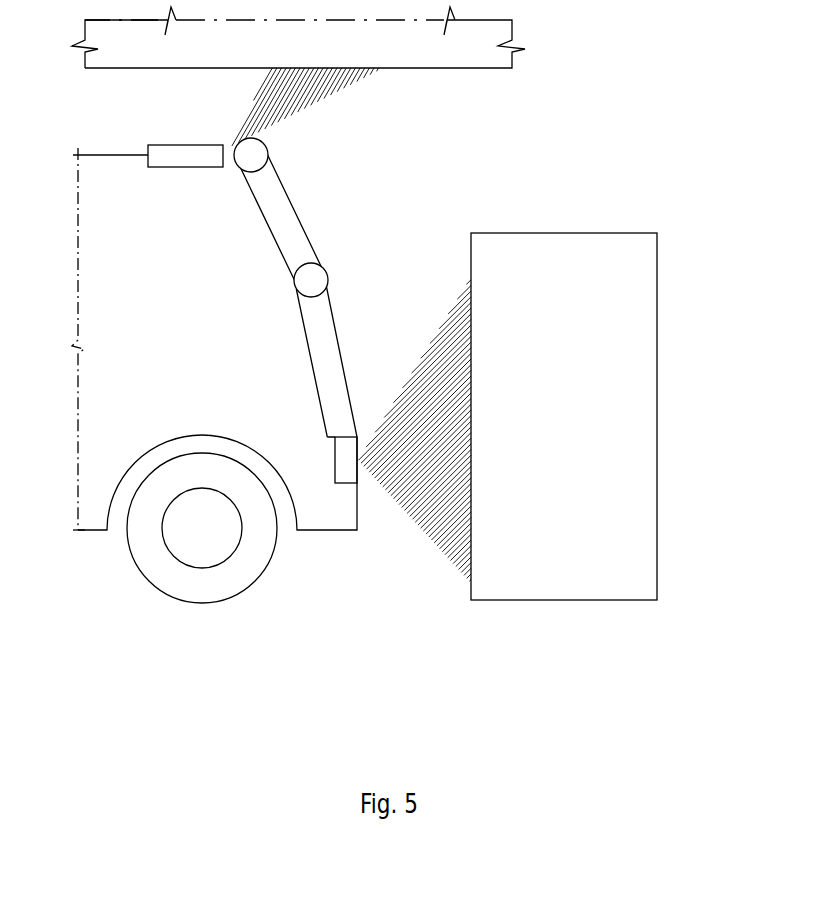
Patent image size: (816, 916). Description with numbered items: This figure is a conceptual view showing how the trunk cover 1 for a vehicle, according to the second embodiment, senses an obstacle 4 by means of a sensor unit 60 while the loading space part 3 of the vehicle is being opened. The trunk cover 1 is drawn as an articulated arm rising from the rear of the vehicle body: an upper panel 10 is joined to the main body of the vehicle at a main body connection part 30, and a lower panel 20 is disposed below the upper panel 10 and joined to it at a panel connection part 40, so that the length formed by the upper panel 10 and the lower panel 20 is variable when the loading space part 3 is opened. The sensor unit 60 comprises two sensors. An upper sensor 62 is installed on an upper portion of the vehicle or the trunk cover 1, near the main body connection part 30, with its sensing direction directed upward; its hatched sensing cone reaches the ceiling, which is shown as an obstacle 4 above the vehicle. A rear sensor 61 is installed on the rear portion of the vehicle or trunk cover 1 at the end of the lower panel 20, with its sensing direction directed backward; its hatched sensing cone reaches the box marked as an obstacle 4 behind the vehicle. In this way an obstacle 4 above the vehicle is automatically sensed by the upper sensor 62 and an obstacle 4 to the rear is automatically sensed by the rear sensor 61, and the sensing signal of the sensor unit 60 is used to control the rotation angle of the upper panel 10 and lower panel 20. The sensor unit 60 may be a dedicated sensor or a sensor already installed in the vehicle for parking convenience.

The trunk cover 1 is at (272, 355).
The loading space part 3 is at (227, 248).
The obstacle 4 is at (469, 58).
The upper panel 10 is at (288, 241).
The lower panel 20 is at (330, 367).
The main body connection part 30 is at (258, 157).
The panel connection part 40 is at (311, 280).
The sensor unit 60 is at (304, 355).
The rear sensor 61 is at (348, 468).
The upper sensor 62 is at (177, 155).